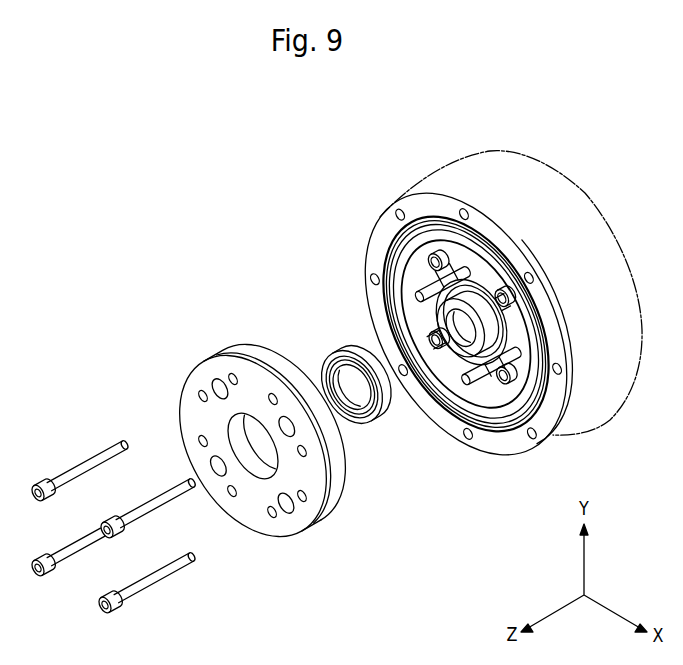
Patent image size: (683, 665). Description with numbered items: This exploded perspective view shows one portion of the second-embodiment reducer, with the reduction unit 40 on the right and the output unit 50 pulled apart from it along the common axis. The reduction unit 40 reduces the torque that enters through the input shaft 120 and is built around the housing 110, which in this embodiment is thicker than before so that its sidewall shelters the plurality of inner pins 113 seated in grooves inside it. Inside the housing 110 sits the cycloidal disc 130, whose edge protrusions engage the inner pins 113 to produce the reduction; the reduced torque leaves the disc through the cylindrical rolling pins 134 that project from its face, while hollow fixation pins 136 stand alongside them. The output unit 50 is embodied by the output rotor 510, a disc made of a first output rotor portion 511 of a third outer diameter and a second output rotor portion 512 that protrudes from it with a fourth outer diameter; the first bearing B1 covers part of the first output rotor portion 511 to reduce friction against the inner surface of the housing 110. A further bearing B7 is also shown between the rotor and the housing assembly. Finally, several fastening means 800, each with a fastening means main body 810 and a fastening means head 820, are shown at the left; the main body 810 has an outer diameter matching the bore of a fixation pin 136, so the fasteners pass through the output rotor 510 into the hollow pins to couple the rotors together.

The reduction unit 40 is at (426, 146).
The housing 110 is at (577, 428).
The inner pin 113 is at (456, 369).
The input shaft 120 is at (513, 250).
The cycloidal disc 130 is at (506, 406).
The rolling pin 134 is at (478, 265).
The fixation pin 136 is at (448, 250).
The first bearing B1 is at (390, 258).
The bearing B7 is at (337, 352).
The output unit 50 is at (273, 454).
The output rotor 510 is at (268, 553).
The first output rotor portion 511 is at (340, 492).
The second output rotor portion 512 is at (302, 538).
The fastening means 800 is at (119, 519).
The fastening means main body 810 is at (110, 443).
The fastening means head 820 is at (40, 483).